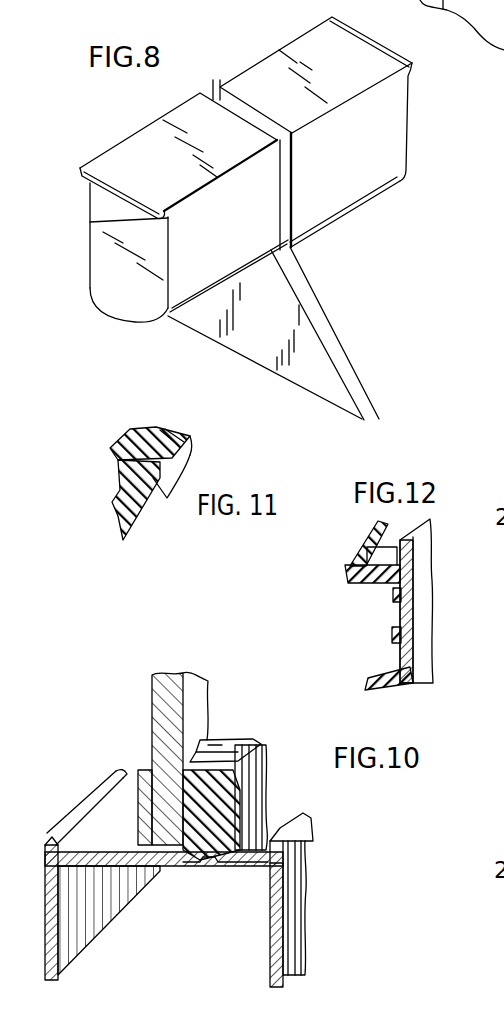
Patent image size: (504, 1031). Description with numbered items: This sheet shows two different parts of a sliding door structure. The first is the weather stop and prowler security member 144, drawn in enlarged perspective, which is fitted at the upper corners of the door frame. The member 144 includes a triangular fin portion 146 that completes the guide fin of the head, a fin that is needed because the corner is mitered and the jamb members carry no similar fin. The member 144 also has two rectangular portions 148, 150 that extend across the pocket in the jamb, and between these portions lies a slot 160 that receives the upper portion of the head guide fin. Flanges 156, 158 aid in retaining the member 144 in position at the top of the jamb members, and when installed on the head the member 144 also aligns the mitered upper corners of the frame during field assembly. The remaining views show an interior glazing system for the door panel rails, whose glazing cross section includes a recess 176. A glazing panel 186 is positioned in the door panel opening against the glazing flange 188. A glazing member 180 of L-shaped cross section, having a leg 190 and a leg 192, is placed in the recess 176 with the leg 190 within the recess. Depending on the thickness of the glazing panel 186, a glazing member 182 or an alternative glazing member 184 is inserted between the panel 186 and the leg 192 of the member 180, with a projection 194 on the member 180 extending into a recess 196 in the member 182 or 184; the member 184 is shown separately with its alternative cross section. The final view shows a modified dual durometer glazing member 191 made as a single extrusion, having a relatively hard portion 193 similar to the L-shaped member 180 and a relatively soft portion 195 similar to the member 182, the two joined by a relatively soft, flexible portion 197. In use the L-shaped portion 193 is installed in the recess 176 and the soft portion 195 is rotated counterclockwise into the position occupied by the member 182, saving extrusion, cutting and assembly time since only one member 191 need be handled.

In FIG. 8, the weather stop and prowler security member 144 is at (368, 200).
In FIG. 8, the triangular fin portion 146 is at (230, 340).
In FIG. 8, the rectangular portion 148 is at (90, 258).
In FIG. 8, the rectangular portion 150 is at (406, 143).
In FIG. 8, the flange 156 is at (103, 193).
In FIG. 8, the flange 158 is at (372, 43).
In FIG. 8, the slot 160 is at (220, 100).
In FIG. 11, the glazing member 184 is at (190, 455).
In FIG. 12, the relatively soft portion 195 is at (365, 584).
In FIG. 12, the relatively soft, flexible portion 197 is at (412, 593).
In FIG. 12, the modified glazing member 191 is at (412, 631).
In FIG. 12, the relatively hard portion 193 is at (413, 669).
In FIG. 10, the glazing panel 186 is at (152, 700).
In FIG. 10, the glazing flange 188 is at (140, 785).
In FIG. 10, the glazing member 182 is at (218, 738).
In FIG. 10, the projection 194 is at (227, 752).
In FIG. 10, the recess 196 is at (241, 787).
In FIG. 10, the glazing member 180 is at (243, 800).
In FIG. 10, the leg 192 is at (232, 813).
In FIG. 10, the recess 176 is at (218, 864).
In FIG. 10, the leg 190 is at (190, 864).